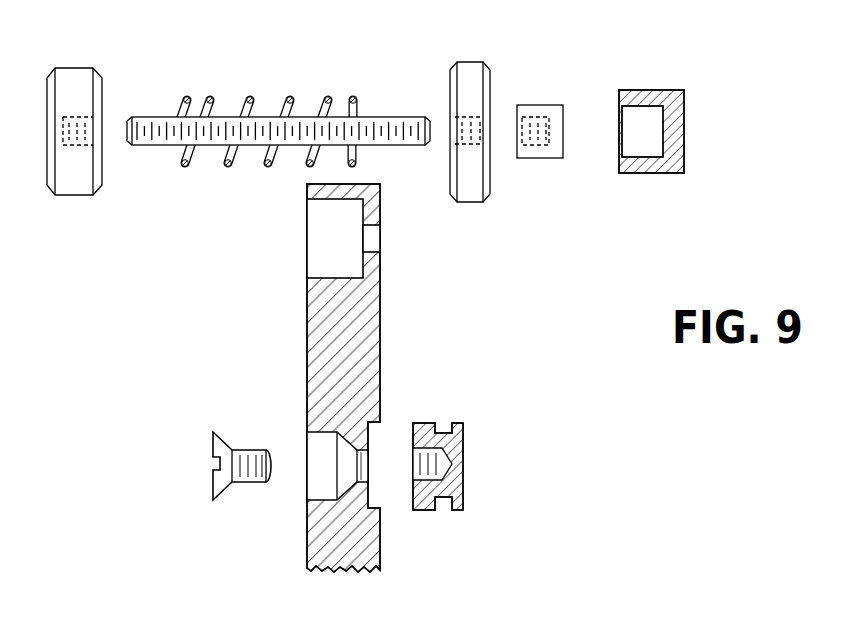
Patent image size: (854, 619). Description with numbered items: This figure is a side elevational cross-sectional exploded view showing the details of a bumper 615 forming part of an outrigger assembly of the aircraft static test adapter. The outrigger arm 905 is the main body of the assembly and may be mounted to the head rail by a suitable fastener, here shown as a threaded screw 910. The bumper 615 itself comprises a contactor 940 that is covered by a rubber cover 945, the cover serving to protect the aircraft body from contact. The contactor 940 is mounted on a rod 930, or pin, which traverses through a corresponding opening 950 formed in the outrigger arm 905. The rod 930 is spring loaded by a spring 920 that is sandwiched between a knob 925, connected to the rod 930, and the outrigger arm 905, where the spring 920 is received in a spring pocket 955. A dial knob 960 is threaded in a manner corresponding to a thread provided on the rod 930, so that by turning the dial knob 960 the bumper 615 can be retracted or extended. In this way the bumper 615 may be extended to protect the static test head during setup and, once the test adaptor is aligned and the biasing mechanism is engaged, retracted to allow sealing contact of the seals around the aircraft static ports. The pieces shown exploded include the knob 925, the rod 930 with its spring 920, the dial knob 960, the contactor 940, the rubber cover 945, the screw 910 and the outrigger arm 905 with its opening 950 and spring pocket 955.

The bumper 615 is at (396, 62).
The outrigger arm 905 is at (365, 337).
The threaded screw 910 is at (243, 452).
The pins 920 is at (248, 97).
The knob 925 is at (75, 75).
The rod 930 is at (153, 115).
The contactor 940 is at (543, 105).
The rubber cover 945 is at (652, 90).
The opening 950 is at (375, 238).
The spring pocket 955 is at (315, 238).
The dial knob 960 is at (470, 62).